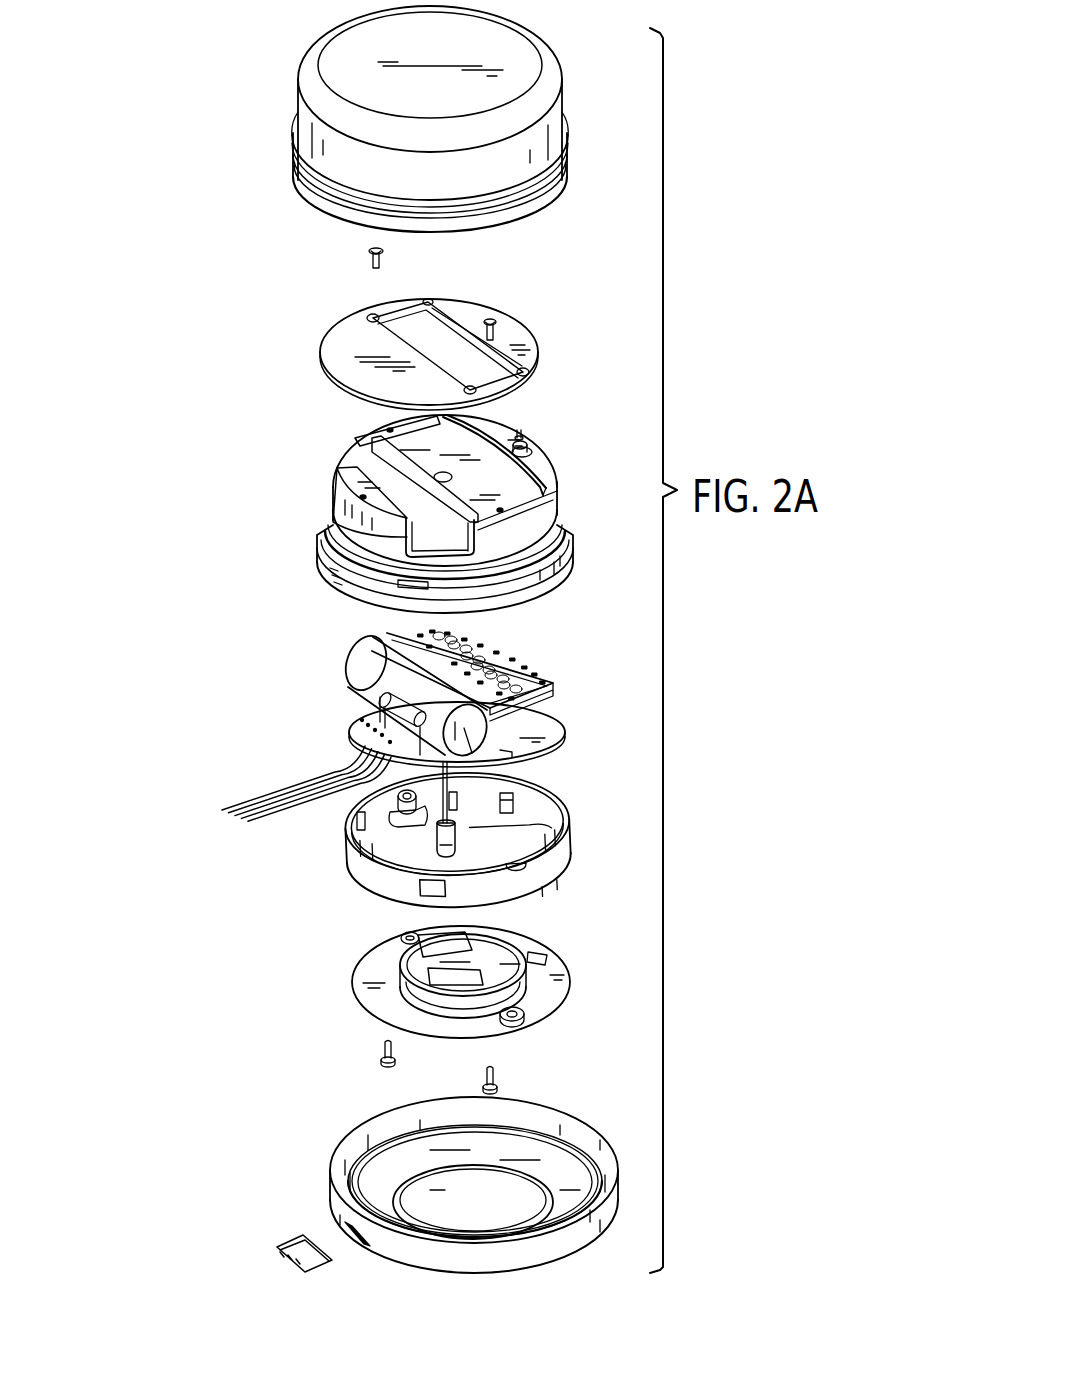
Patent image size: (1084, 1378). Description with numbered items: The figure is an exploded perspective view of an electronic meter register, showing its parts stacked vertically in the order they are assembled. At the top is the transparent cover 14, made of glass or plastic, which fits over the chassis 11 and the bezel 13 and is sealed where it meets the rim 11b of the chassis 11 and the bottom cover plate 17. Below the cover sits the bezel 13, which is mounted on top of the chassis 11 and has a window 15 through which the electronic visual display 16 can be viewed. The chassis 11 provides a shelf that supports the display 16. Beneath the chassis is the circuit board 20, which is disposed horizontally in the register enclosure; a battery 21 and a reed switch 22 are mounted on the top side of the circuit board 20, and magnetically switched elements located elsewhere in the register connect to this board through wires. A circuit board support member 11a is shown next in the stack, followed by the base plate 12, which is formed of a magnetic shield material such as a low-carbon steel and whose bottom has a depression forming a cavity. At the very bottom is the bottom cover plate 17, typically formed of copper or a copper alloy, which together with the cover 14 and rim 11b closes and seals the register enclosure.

The chassis 11 is at (552, 460).
The circuit board support member 11a is at (560, 793).
The rim 11b is at (470, 509).
The base plate 12 is at (563, 1000).
The bezel 13 is at (465, 333).
The transparent cover 14 is at (548, 63).
The window 15 is at (457, 323).
The electronic visual display 16 is at (497, 642).
The bottom cover plate 17 is at (560, 1110).
The circuit board 20 is at (412, 716).
The battery 21 is at (348, 652).
The reed switch 22 is at (385, 705).